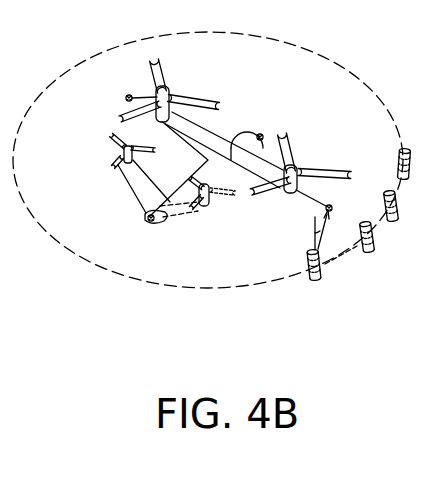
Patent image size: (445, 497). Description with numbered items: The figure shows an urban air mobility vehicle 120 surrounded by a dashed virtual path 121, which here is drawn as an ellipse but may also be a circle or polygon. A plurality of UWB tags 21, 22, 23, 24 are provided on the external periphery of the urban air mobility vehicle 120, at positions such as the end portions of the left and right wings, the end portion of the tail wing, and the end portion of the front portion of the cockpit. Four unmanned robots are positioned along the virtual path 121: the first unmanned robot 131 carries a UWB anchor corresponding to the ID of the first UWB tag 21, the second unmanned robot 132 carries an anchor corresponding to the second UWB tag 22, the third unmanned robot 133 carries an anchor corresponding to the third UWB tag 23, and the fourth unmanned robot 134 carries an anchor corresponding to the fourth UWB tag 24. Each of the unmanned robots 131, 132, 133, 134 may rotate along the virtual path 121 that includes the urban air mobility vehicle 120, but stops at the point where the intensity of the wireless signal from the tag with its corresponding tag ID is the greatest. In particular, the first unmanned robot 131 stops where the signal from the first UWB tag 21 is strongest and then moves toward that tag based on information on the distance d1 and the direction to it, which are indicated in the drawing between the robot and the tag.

The urban air mobility vehicle 120 is at (236, 134).
The virtual path 121 is at (193, 290).
The first UWB tag 21 is at (332, 205).
The second UWB tag 22 is at (260, 134).
The third UWB tag 23 is at (126, 98).
The fourth UWB tag 24 is at (149, 222).
The first unmanned robot 131 is at (318, 278).
The second unmanned robot 132 is at (397, 152).
The third unmanned robot 133 is at (395, 220).
The fourth unmanned robot 134 is at (367, 253).
The distance d1 is at (339, 246).